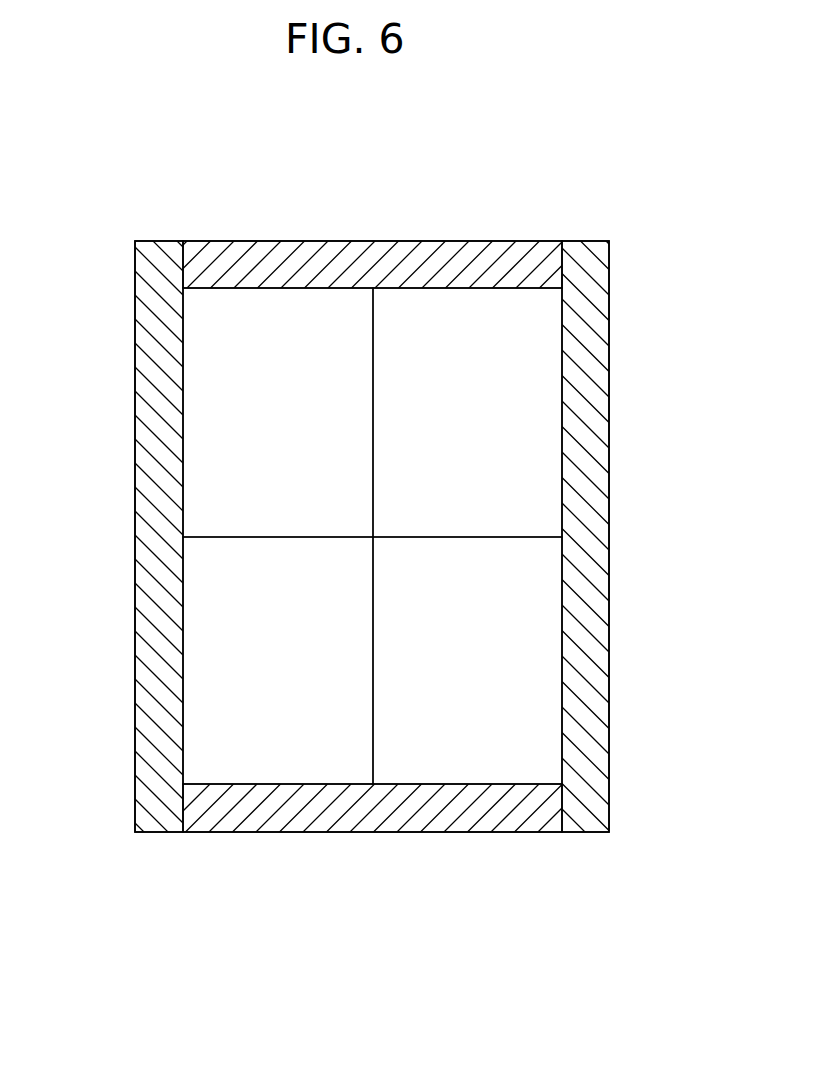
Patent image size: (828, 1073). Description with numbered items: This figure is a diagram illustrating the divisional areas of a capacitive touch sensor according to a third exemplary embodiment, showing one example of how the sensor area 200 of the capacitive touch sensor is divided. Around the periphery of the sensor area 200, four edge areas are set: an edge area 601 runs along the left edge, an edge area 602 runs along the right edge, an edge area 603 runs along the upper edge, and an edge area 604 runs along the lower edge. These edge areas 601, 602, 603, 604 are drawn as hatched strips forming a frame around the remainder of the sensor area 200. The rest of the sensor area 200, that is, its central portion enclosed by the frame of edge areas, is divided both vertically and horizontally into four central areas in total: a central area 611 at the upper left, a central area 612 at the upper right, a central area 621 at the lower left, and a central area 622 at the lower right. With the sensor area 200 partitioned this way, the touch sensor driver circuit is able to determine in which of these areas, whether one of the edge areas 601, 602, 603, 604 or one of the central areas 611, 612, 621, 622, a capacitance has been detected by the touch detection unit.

The sensor area 200 is at (188, 232).
The edge area 601 is at (150, 535).
The edge area 602 is at (600, 499).
The edge area 603 is at (362, 240).
The edge area 604 is at (382, 832).
The central area 611 is at (305, 425).
The central area 612 is at (483, 425).
The central area 621 is at (305, 680).
The central area 622 is at (482, 680).